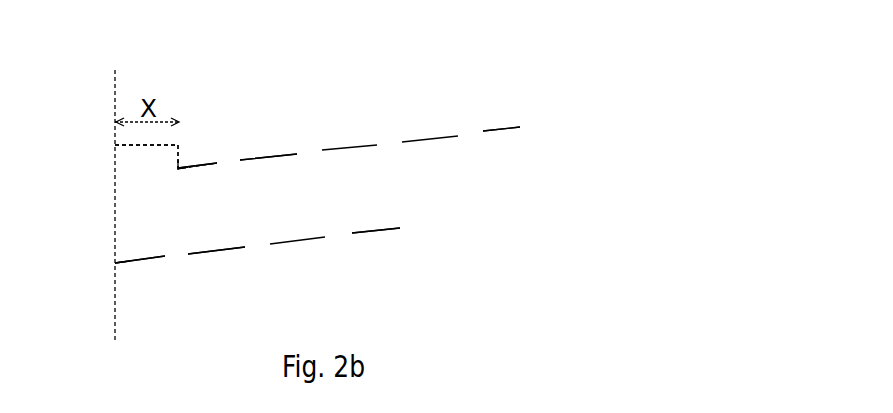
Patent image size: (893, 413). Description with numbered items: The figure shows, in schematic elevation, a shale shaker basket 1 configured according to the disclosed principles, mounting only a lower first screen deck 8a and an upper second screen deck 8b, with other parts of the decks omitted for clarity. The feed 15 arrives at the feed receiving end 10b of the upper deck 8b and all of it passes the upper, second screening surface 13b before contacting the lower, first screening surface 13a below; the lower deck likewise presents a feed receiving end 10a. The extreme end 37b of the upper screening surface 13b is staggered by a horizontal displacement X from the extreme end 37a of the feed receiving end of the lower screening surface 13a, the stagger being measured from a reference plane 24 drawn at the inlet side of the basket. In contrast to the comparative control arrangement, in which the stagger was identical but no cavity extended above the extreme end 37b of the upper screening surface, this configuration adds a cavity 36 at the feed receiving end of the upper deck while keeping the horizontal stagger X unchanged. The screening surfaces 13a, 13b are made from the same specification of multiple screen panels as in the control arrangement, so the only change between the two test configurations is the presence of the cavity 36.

The flow channel device 1 is at (317, 103).
The feed 15 is at (168, 82).
The inlet plane 24 is at (115, 213).
The cavity 36 is at (143, 157).
The extreme end 37a is at (122, 265).
The extreme end 37b is at (180, 168).
The lower channel wall 10a is at (130, 258).
The feed receiving end 10b is at (198, 167).
The lower first screen deck 8a is at (355, 232).
The upper second screen deck 8b is at (405, 142).
The lower first screening surface 13a is at (377, 232).
The upper second screening surface 13b is at (497, 128).